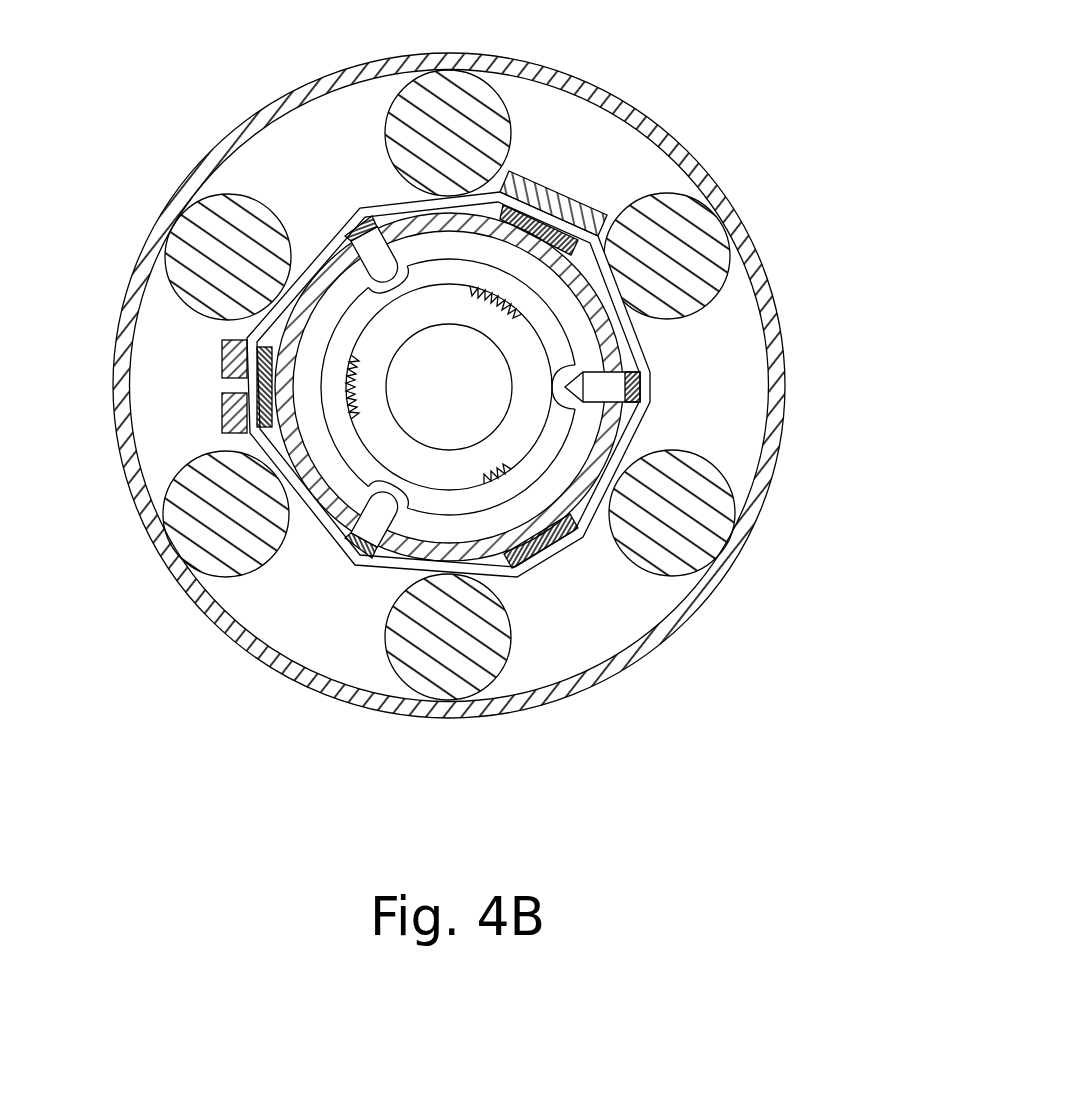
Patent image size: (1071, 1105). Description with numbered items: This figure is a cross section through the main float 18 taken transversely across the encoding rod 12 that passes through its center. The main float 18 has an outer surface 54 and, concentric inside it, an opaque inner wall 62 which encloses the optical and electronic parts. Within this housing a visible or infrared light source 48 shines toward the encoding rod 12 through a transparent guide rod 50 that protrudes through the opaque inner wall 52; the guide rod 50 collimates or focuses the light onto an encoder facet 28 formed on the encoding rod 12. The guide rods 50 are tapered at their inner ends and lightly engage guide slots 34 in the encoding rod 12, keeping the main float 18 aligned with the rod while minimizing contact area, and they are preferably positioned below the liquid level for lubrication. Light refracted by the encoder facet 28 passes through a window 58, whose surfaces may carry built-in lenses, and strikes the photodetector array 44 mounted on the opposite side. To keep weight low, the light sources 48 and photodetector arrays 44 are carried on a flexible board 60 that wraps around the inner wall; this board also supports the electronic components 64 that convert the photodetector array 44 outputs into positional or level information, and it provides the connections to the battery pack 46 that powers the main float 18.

The encoding rod 12 is at (600, 338).
The main float 18 is at (687, 150).
The encoder facet 28 is at (510, 463).
The guide slot 34 is at (557, 402).
The photodetector array 44 is at (510, 570).
The battery pack 46 is at (690, 532).
The light source 48 is at (345, 233).
The guide rod 50 is at (370, 253).
The opaque inner wall 52 is at (613, 413).
The outer surface 54 is at (117, 358).
The window 58 is at (550, 517).
The flexible board 60 is at (393, 563).
The opaque inner wall 62 is at (577, 210).
The electronic components 64 is at (232, 408).